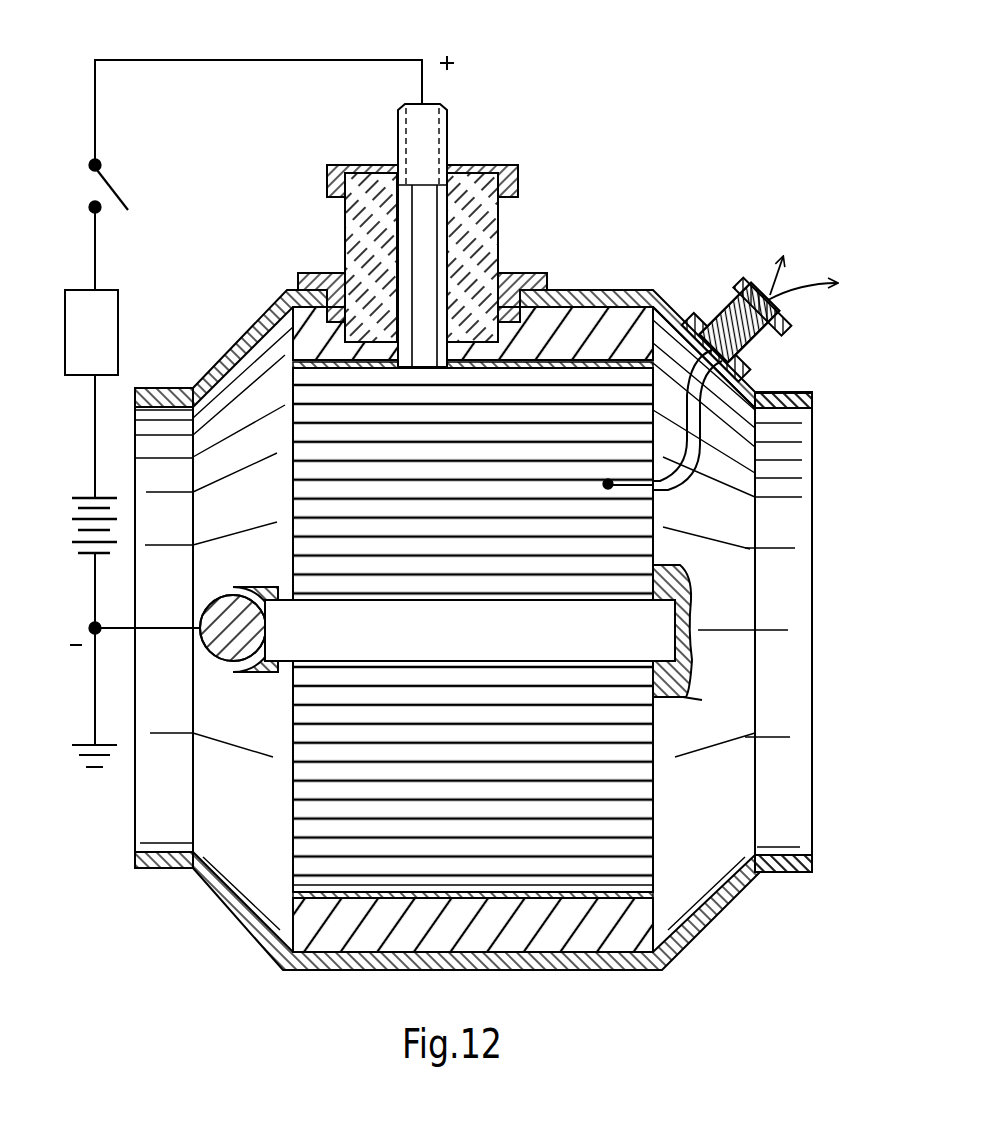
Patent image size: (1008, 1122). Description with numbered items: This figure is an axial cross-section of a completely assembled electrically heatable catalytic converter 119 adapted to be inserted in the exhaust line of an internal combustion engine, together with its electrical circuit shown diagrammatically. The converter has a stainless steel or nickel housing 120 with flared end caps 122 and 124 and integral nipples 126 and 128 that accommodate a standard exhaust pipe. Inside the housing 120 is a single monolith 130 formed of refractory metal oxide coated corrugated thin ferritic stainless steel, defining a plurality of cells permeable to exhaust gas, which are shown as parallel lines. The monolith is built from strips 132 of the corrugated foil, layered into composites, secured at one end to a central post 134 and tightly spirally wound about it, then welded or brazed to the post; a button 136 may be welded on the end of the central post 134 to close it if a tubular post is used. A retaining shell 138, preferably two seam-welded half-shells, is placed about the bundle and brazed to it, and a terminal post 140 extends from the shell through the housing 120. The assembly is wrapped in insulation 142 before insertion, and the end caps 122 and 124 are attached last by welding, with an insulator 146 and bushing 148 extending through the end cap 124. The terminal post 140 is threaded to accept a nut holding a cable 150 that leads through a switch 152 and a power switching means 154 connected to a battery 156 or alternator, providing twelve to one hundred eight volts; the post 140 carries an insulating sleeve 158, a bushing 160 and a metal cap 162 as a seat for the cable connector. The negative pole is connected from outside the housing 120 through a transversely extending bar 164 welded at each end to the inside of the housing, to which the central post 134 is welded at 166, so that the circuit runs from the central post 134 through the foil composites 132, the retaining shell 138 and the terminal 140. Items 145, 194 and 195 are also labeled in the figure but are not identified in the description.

The electrically heatable catalytic converter 119 is at (574, 268).
The housing 120 is at (610, 290).
The flared end cap 122 is at (235, 350).
The flared end cap 124 is at (757, 385).
The nipple 126 is at (156, 400).
The nipple 128 is at (783, 392).
The monolith 130 is at (664, 858).
The strips 132 is at (320, 837).
The central post 134 is at (474, 645).
The button 136 is at (667, 758).
The retaining shell 138 is at (460, 362).
The terminal post 140 is at (424, 132).
The insulation 142 is at (310, 965).
The motion arrows 145 is at (768, 305).
The insulator 146 is at (733, 290).
The bushing 148 is at (694, 313).
The cable 150 is at (244, 58).
The switch 152 is at (117, 187).
The power switching means 154 is at (77, 325).
The battery 156 is at (68, 517).
The insulating sleeve 158 is at (377, 230).
The bushing 160 is at (342, 280).
The metal cap 162 is at (493, 166).
The transversely extending bar 164 is at (228, 645).
The weld 166 is at (274, 588).
The wire 194 is at (757, 483).
The lead wire 195 is at (612, 488).